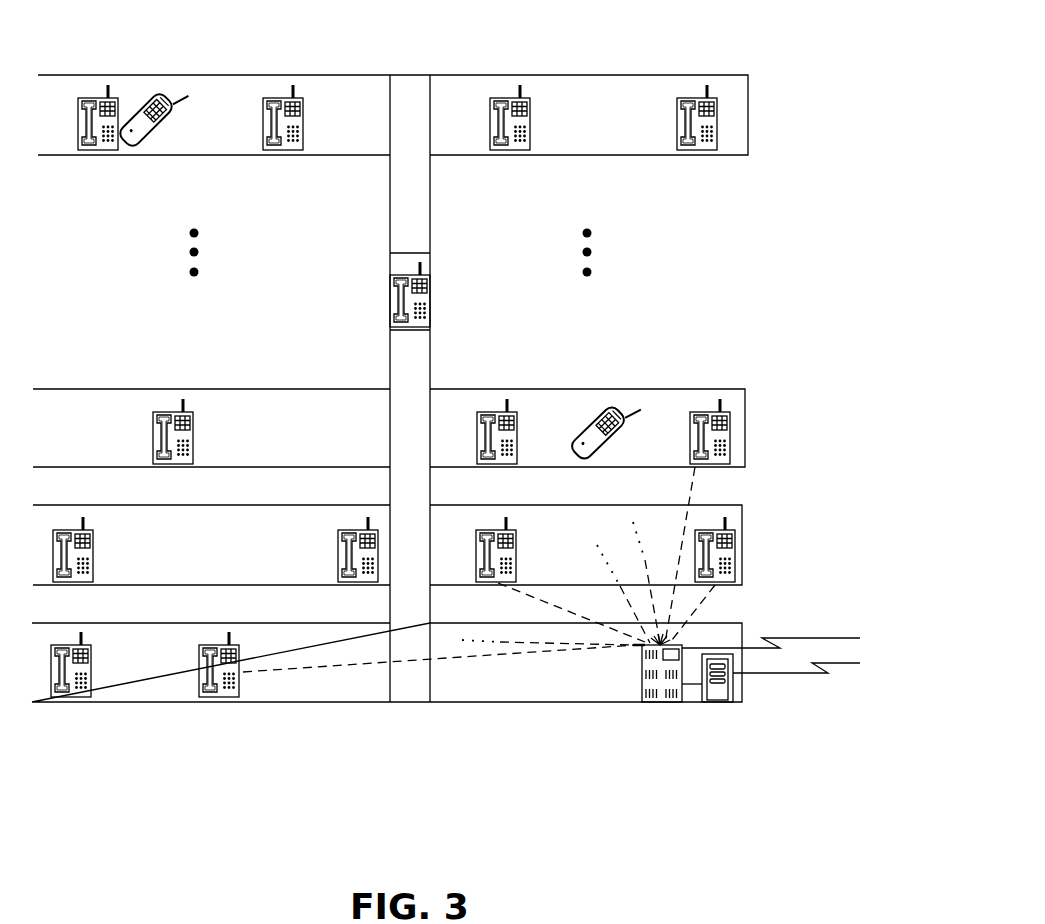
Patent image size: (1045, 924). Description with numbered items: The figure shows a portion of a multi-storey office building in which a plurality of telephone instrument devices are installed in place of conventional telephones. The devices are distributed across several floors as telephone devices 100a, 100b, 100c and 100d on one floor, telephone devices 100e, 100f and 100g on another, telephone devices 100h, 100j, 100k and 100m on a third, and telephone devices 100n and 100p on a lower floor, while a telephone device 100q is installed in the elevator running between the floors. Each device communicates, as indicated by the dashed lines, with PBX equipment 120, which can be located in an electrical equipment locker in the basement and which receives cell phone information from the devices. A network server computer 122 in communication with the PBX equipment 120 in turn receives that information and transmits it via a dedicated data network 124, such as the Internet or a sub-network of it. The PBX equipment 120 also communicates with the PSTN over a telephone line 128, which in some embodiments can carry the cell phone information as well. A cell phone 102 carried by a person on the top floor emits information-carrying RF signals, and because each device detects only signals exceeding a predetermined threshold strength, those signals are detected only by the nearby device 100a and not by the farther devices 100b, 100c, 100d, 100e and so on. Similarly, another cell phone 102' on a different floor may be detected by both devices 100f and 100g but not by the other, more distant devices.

The telephone device 100a is at (102, 150).
The telephone device 100b is at (285, 150).
The telephone device 100c is at (503, 150).
The telephone device 100d is at (705, 150).
The telephone device 100e is at (168, 411).
The telephone device 100f is at (487, 412).
The telephone device 100g is at (730, 435).
The telephone device 100h is at (63, 530).
The telephone device 100j is at (350, 530).
The telephone device 100k is at (483, 530).
The telephone device 100m is at (735, 555).
The telephone device 100n is at (62, 645).
The telephone device 100p is at (210, 645).
The telephone device 100q is at (390, 293).
The cell phone 102 is at (152, 90).
The cell phone 102' is at (618, 402).
The PBX equipment 120 is at (658, 703).
The network server computer 122 is at (712, 703).
The dedicated data network 124 is at (817, 676).
The telephone line 128 is at (798, 638).